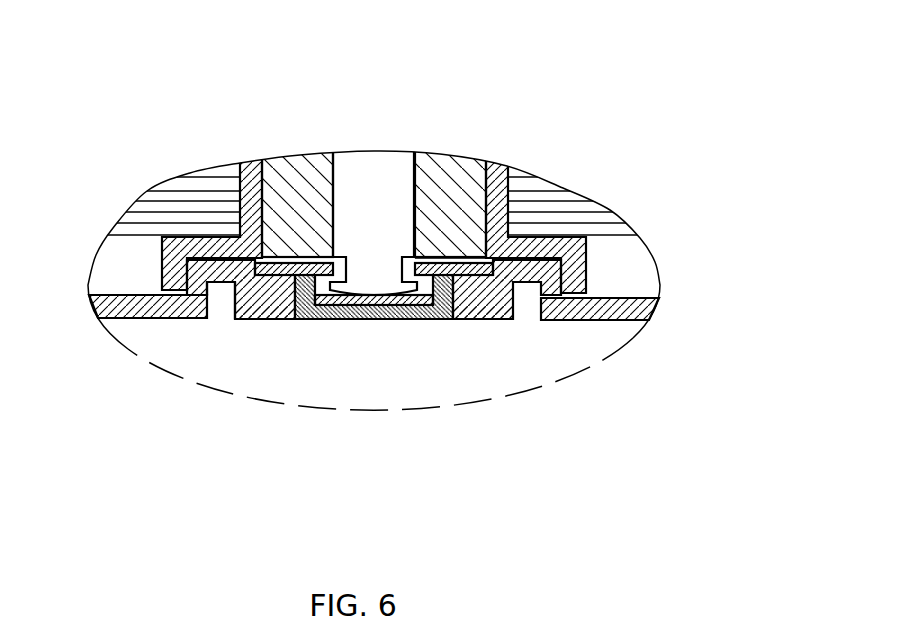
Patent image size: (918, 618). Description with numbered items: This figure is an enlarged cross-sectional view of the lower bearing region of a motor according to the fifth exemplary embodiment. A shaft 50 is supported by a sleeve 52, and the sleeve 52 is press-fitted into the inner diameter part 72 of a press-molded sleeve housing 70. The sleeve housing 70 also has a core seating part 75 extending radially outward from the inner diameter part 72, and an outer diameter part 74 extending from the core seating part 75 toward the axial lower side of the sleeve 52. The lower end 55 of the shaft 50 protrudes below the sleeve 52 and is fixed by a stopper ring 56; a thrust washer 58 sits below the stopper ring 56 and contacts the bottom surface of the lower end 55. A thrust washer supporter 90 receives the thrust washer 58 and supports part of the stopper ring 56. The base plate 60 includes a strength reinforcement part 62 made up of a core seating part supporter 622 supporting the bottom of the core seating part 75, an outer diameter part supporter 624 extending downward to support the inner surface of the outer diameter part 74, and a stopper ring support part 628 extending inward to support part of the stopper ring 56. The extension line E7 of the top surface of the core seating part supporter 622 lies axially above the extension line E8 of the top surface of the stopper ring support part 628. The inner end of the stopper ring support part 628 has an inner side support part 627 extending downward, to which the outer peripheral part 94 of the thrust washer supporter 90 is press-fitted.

The shaft 50 is at (366, 163).
The sleeve 52 is at (299, 155).
The lower end 55 is at (375, 256).
The stopper ring 56 is at (475, 272).
The thrust washer 58 is at (347, 319).
The base plate 60 is at (110, 319).
The strength reinforcement part 62 is at (341, 405).
The core seating part supporter 622 is at (220, 283).
The outer diameter part supporter 624 is at (205, 320).
The inner side support part 627 is at (374, 391).
The stopper ring support part 628 is at (258, 288).
The sleeve housing 70 is at (330, 191).
The inner diameter part 72 is at (242, 185).
The outer diameter part 74 is at (331, 236).
The core seating part 75 is at (203, 236).
The thrust washer supporter 90 is at (395, 354).
The outer peripheral part 94 is at (443, 319).
The extension line of top surface of strength reinforcement part E7 is at (487, 259).
The extension line of top surface of stopper ring support part E8 is at (480, 274).